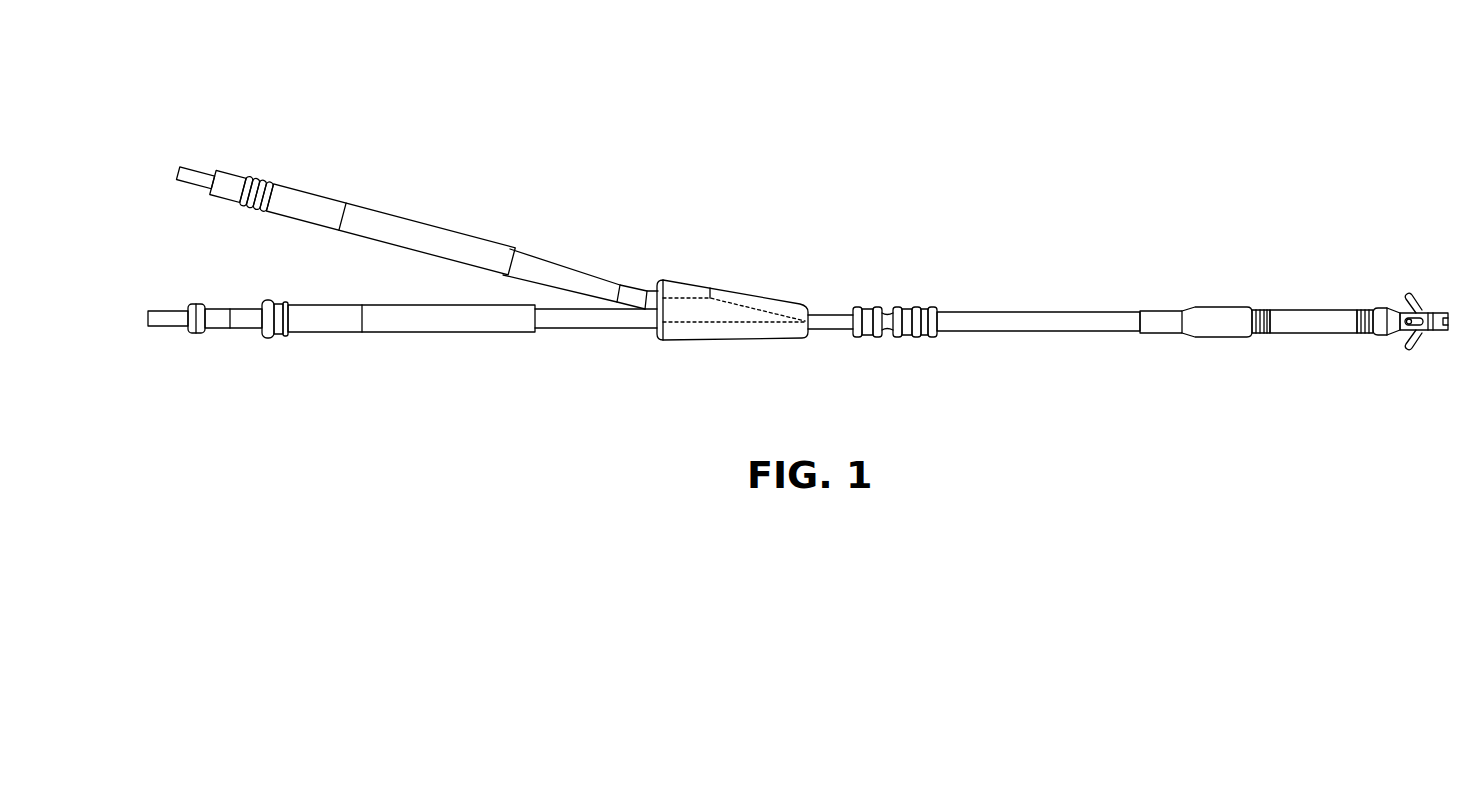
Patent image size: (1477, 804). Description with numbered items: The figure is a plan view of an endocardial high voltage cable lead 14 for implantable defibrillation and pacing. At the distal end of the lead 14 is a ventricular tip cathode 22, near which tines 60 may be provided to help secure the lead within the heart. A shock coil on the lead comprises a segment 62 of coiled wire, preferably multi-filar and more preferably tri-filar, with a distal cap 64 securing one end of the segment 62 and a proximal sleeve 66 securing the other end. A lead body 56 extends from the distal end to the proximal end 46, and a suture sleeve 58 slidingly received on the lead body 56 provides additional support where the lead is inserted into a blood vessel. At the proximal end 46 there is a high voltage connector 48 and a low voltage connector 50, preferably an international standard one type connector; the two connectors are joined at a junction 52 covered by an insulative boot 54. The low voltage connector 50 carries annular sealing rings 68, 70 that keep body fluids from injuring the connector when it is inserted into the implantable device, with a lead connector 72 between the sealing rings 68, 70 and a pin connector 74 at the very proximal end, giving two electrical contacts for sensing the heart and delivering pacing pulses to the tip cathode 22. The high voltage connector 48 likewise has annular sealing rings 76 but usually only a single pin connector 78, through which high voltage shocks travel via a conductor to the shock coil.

The endocardial high voltage cable lead 14 is at (965, 103).
The ventricular tip cathode 22 is at (1446, 312).
The proximal end 46 is at (417, 192).
The high voltage connector 48 is at (390, 229).
The low voltage connector 50 is at (410, 333).
The junction 52 is at (688, 283).
The insulative boot 54 is at (727, 334).
The lead body 56 is at (1038, 312).
The suture sleeve 58 is at (905, 307).
The tines 60 is at (1417, 338).
The segment of coiled wire 62 is at (1258, 335).
The distal cap 64 is at (1383, 307).
The proximal sleeve 66 is at (1188, 307).
The annular sealing ring 68 is at (281, 299).
The annular sealing ring 70 is at (201, 303).
The lead connector 72 is at (246, 330).
The pin connector 74 is at (168, 328).
The annular sealing rings 76 is at (241, 190).
The pin connector 78 is at (195, 178).